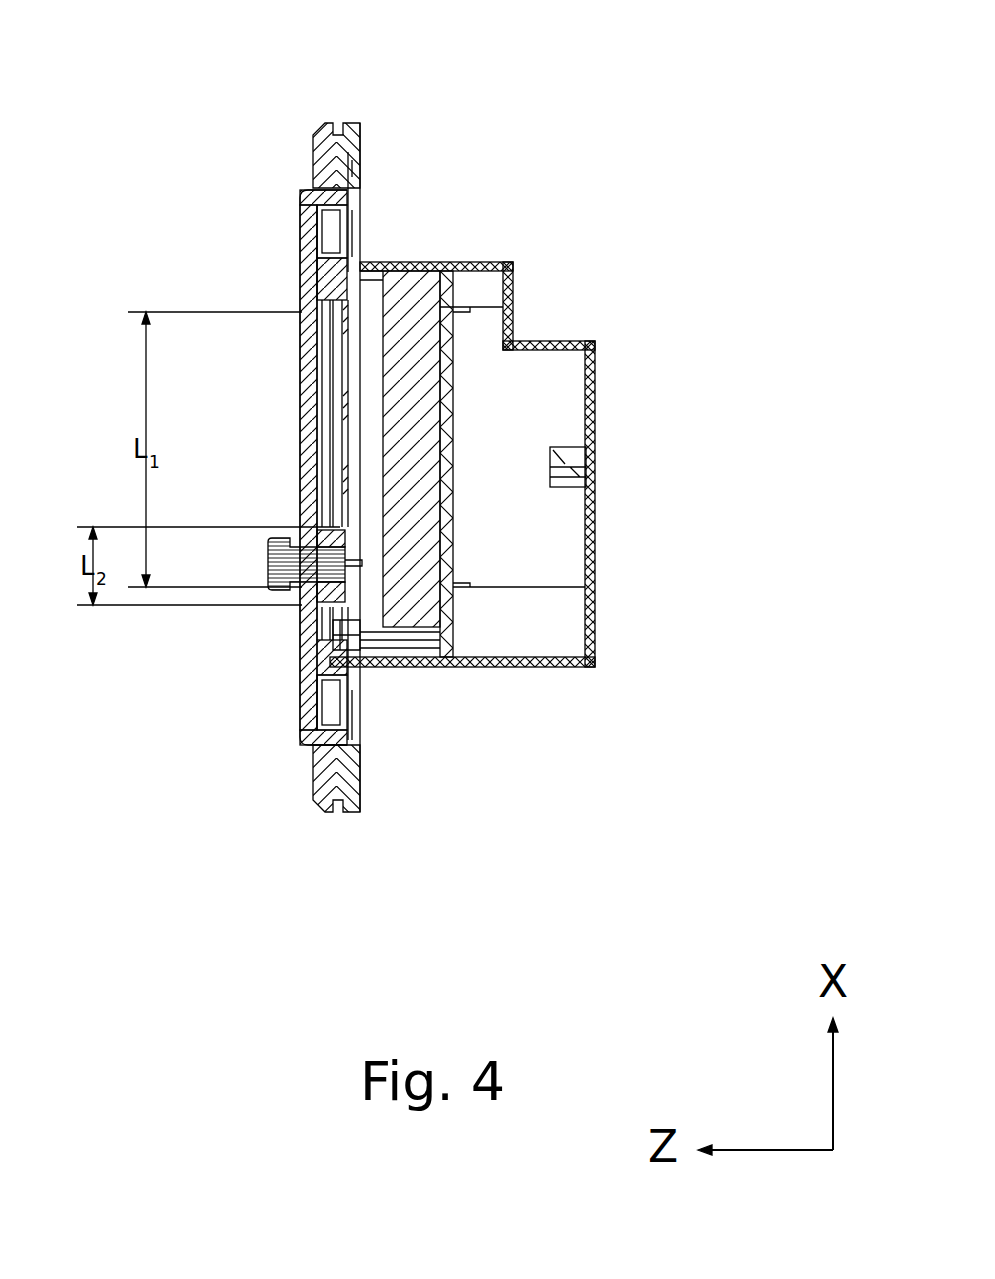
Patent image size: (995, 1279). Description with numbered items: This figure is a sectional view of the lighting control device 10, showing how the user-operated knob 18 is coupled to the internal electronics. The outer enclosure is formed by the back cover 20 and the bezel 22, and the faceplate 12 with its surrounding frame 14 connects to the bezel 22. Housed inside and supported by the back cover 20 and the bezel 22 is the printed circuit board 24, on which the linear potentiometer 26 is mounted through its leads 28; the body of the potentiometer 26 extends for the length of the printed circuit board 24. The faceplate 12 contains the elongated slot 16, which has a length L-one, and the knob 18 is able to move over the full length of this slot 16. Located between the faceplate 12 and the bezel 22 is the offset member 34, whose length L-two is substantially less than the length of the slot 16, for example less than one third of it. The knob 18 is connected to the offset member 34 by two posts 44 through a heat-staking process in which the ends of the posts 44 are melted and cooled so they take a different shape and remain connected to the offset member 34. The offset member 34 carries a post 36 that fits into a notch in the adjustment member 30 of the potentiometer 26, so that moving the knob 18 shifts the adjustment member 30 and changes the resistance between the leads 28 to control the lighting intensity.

The lighting control device 10 is at (472, 58).
The faceplate 12 is at (300, 245).
The frame 14 is at (313, 150).
The elongated slot 16 is at (306, 378).
The knob 18 is at (272, 563).
The back cover 20 is at (596, 526).
The bezel 22 is at (302, 656).
The printed circuit board 24 is at (449, 668).
The linear potentiometer 26 is at (400, 290).
The leads 28 is at (460, 316).
The adjustment member 30 is at (440, 510).
The offset member 34 is at (340, 545).
The post 36 is at (347, 592).
The posts 44 is at (388, 648).